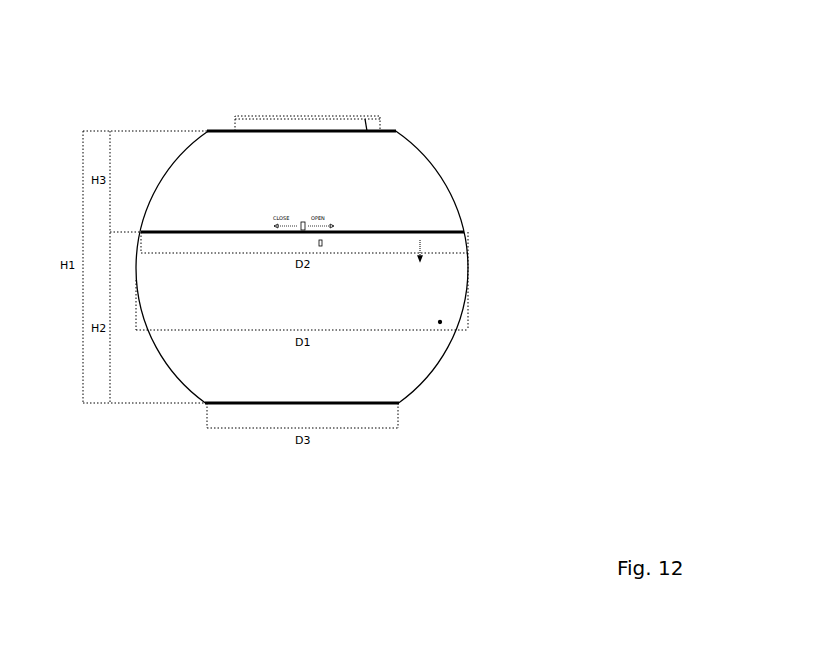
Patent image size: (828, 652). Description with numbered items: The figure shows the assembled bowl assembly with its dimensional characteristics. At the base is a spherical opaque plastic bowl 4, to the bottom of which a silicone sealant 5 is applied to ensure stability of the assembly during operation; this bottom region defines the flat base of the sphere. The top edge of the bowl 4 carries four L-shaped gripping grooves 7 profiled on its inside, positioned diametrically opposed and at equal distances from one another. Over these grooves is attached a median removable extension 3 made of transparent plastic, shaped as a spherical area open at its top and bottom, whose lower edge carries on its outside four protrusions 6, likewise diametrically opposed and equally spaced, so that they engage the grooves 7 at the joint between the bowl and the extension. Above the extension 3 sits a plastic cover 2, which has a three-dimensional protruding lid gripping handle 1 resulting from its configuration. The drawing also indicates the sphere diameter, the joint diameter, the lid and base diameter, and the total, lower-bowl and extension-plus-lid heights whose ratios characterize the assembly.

The lid gripping handle 1 is at (378, 120).
The plastic cover 2 is at (395, 131).
The median removable extension 3 is at (443, 172).
The opaque plastic bowl 4 is at (492, 307).
The silicone sealant 5 is at (375, 426).
The protrusions 6 is at (456, 234).
The "L" shaped gripping grooves 7 is at (481, 256).